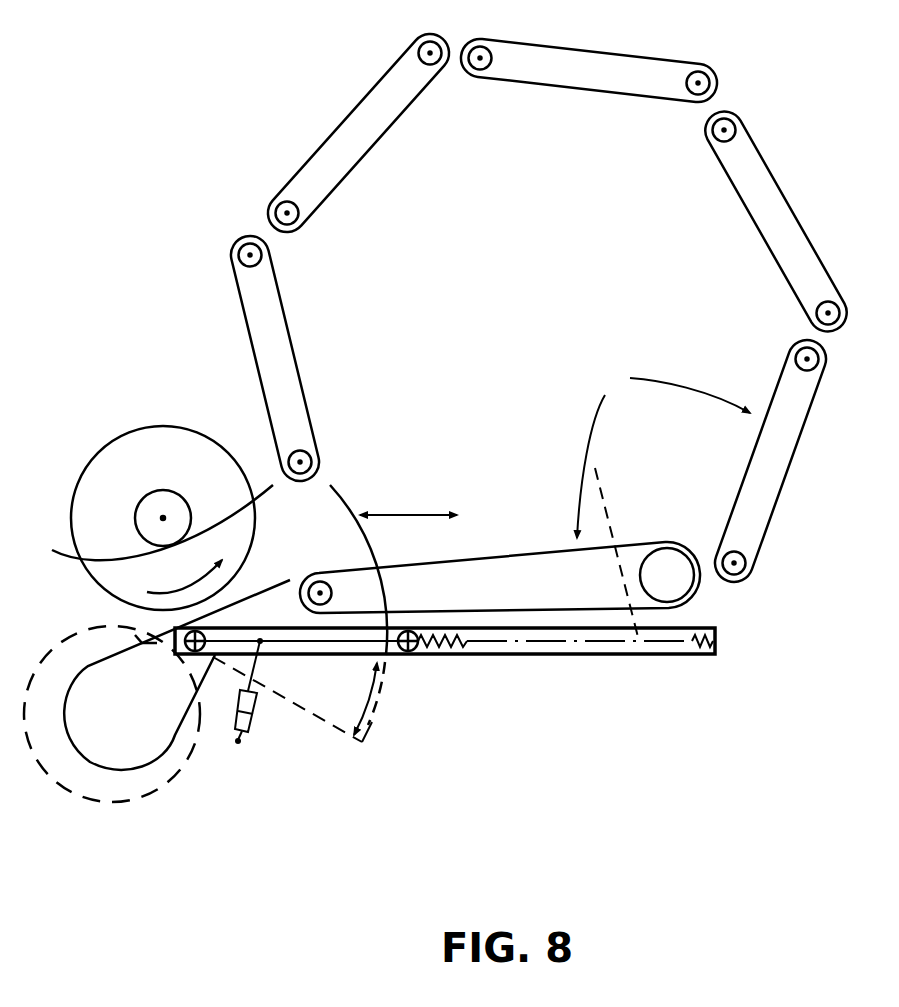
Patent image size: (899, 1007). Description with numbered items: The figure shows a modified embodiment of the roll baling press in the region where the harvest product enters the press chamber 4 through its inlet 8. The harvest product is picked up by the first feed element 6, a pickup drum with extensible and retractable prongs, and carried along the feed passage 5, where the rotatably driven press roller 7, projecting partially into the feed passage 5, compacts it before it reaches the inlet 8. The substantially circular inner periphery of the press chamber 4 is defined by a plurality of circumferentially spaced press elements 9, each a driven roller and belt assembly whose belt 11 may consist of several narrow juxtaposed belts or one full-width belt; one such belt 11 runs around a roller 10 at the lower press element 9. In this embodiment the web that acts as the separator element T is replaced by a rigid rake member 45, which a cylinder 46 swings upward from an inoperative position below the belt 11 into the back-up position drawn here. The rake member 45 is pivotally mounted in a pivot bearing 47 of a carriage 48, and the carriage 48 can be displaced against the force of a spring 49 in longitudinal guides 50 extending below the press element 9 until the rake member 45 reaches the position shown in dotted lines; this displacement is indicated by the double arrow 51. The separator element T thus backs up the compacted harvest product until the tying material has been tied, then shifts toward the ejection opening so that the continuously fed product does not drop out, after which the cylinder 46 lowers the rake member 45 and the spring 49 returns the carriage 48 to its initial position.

The press chamber 4 is at (713, 240).
The feed passage 5 is at (287, 520).
The first feed element 6 is at (82, 760).
The press roller 7 is at (130, 483).
The inlet 8 is at (349, 503).
The press element 9 is at (663, 497).
The belt roller 10 is at (667, 575).
The belt 11 is at (517, 553).
The separator element T is at (351, 502).
The rake member 45 is at (373, 547).
The cylinder 46 is at (257, 712).
The pivot bearing 47 is at (185, 657).
The carriage 48 is at (415, 657).
The spring 49 is at (458, 657).
The carrier bar 50 is at (547, 657).
The double arrow 51 is at (425, 513).